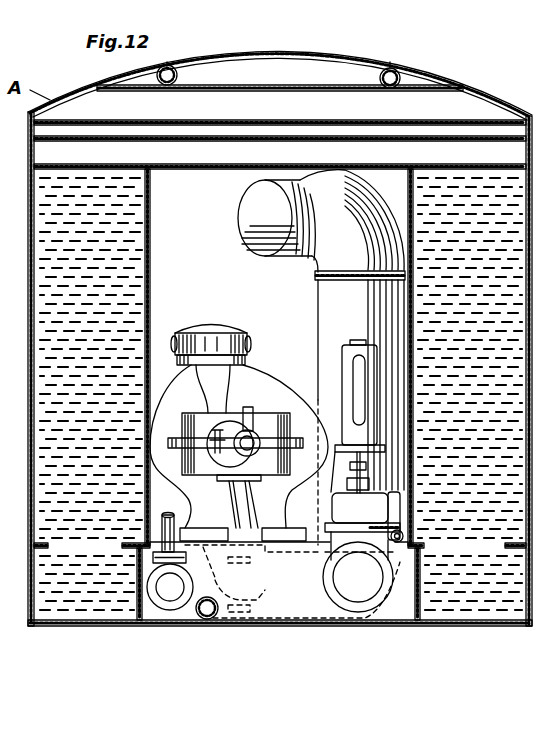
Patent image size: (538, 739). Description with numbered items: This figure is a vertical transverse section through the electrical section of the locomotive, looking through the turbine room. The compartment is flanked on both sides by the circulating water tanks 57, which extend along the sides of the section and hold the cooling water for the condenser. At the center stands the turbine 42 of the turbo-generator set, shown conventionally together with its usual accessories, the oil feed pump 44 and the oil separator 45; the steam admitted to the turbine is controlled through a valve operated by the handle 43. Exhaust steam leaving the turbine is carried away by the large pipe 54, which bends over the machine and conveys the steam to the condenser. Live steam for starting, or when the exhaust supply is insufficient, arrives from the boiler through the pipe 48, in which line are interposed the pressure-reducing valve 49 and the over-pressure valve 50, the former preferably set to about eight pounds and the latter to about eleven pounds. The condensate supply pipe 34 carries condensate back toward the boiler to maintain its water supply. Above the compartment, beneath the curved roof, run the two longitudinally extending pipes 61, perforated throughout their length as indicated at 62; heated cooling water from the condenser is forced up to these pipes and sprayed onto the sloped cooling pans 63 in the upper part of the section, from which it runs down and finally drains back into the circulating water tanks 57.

The longitudinally extending pipe 61 is at (172, 64).
The perforation 62 is at (178, 75).
The cooling pan 63 is at (258, 91).
The circulating water tank 57 is at (36, 471).
The exhaust steam pipe 54 is at (272, 250).
The turbine 42 is at (252, 365).
The oil feed pump 44 is at (194, 414).
The oil separator 45 is at (341, 351).
The handle 43 is at (326, 457).
The live steam pipe 48 is at (166, 514).
The pressure-reducing valve 49 is at (187, 557).
The over-pressure valve 50 is at (160, 612).
The condensate supply pipe 34 is at (201, 621).